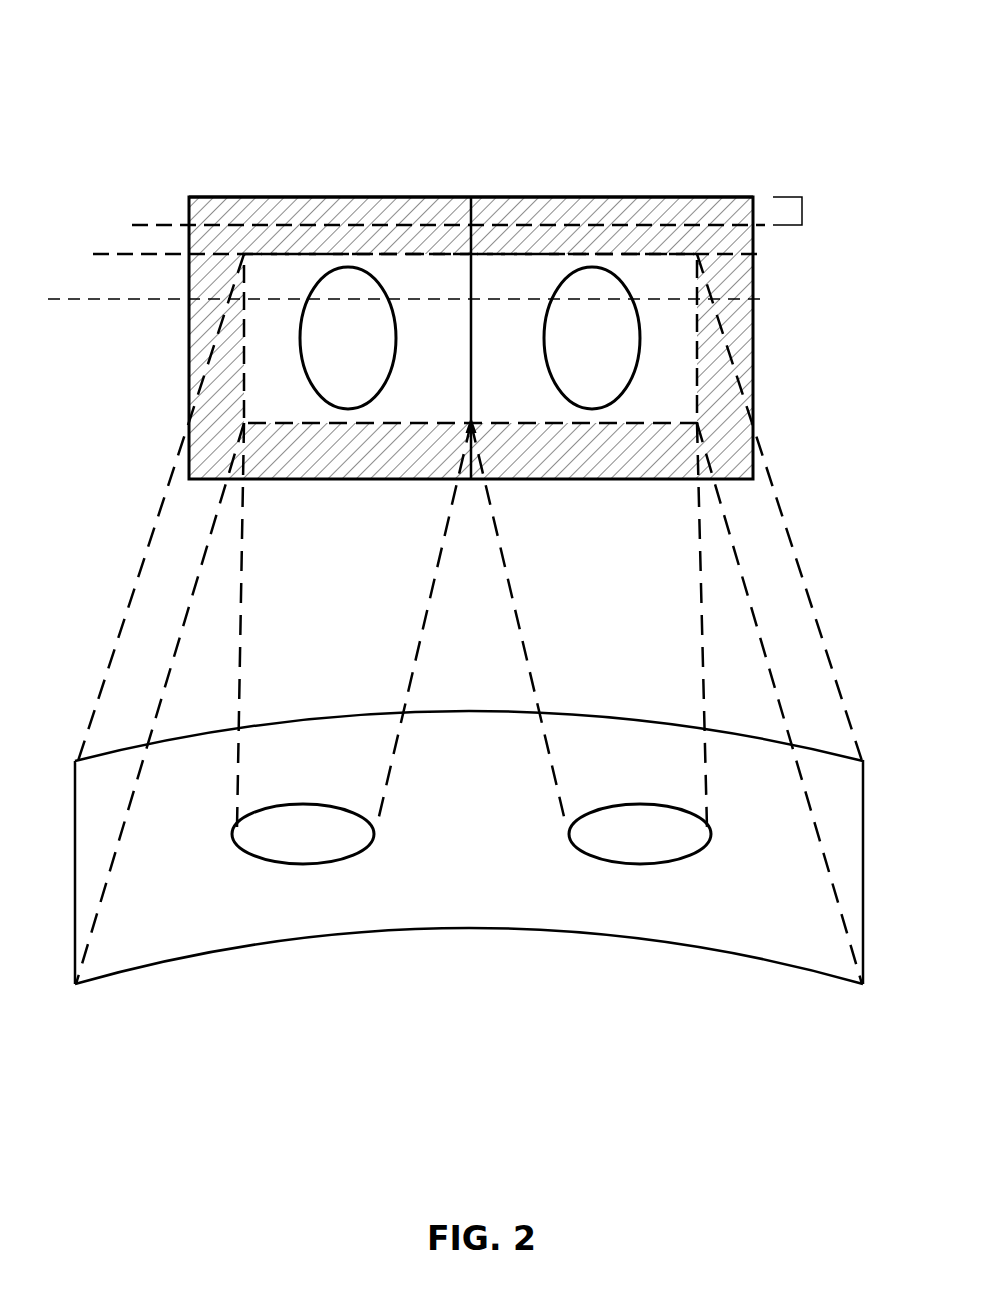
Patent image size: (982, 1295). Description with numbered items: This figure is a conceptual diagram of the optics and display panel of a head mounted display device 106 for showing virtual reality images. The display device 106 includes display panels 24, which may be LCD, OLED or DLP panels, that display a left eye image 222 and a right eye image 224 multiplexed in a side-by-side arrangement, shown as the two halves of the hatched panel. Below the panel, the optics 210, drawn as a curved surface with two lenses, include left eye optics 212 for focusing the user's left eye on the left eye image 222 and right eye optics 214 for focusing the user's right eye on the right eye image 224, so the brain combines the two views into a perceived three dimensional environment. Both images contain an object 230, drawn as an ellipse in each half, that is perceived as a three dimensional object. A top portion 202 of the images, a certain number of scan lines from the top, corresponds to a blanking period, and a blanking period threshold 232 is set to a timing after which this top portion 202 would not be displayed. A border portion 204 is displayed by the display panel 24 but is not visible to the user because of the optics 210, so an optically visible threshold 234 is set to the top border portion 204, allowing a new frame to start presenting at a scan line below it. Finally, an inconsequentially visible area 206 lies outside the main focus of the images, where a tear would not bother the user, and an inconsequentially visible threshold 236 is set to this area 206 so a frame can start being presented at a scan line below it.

The display device 106 is at (175, 55).
The display panels 24 is at (700, 197).
The top portion 202 is at (803, 211).
The border portion 204 is at (534, 208).
The inconsequentially visible area 206 is at (421, 262).
The optics 210 is at (442, 931).
The left eye optics 212 is at (270, 862).
The right eye optics 214 is at (640, 864).
The left eye image 222 is at (312, 197).
The right eye image 224 is at (583, 197).
The object 230 is at (338, 262).
The blanking period threshold 232 is at (150, 225).
The optically visible threshold 234 is at (100, 254).
The inconsequentially visible threshold 236 is at (50, 297).